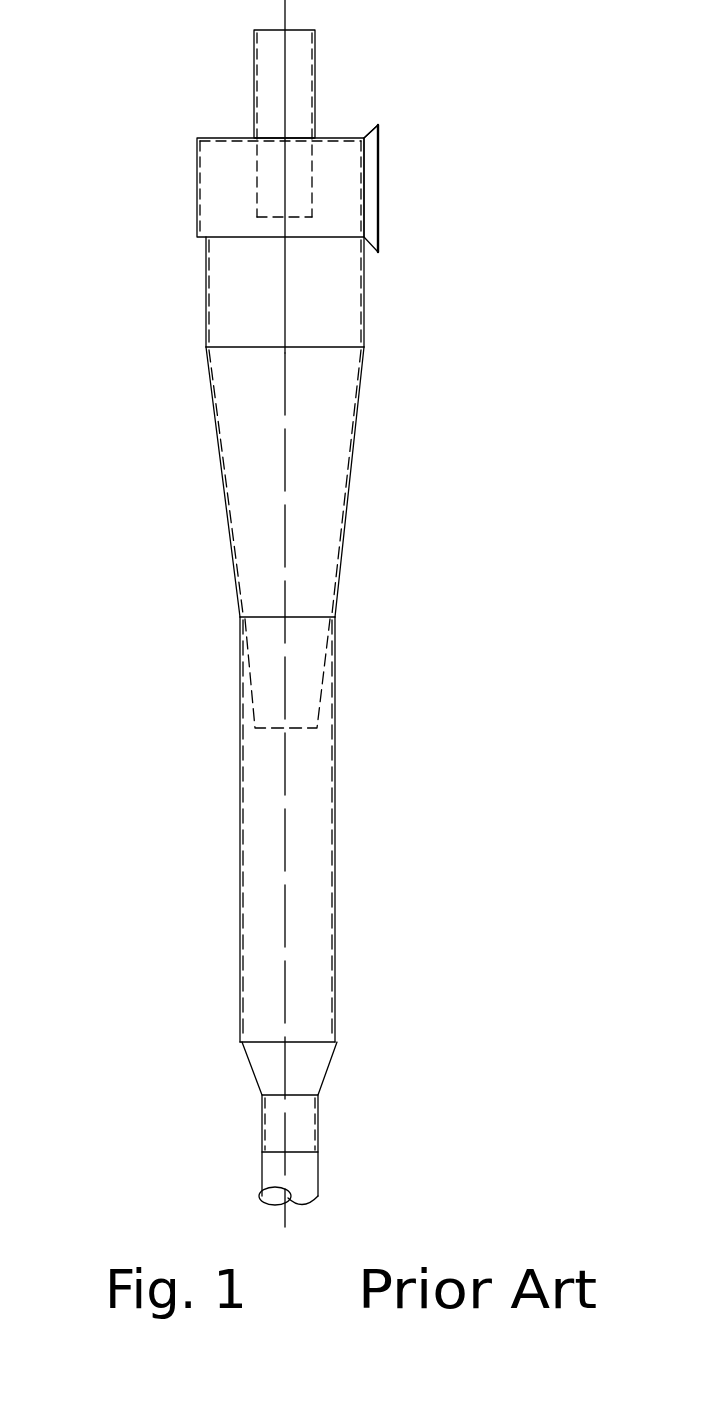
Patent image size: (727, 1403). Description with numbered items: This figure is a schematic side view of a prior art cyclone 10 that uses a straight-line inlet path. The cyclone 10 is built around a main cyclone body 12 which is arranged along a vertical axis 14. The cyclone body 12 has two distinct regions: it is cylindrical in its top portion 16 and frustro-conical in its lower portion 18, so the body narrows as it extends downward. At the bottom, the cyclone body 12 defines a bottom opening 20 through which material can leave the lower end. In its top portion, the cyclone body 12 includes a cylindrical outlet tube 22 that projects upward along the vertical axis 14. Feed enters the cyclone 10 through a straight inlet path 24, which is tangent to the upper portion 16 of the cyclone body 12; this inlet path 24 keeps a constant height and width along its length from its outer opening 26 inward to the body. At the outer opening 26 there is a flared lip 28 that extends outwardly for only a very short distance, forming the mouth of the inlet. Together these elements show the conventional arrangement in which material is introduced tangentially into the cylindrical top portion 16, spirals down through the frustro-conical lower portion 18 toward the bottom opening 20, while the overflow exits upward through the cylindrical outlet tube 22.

The prior art cyclone 10 is at (340, 613).
The main cyclone body 12 is at (379, 465).
The vertical axis 14 is at (176, 613).
The top portion 16 is at (207, 309).
The lower portion 18 is at (212, 482).
The bottom opening 20 is at (239, 911).
The cylindrical outlet tube 22 is at (206, 108).
The straight inlet path 24 is at (350, 225).
The outer opening 26 is at (443, 188).
The flared lip 28 is at (391, 76).